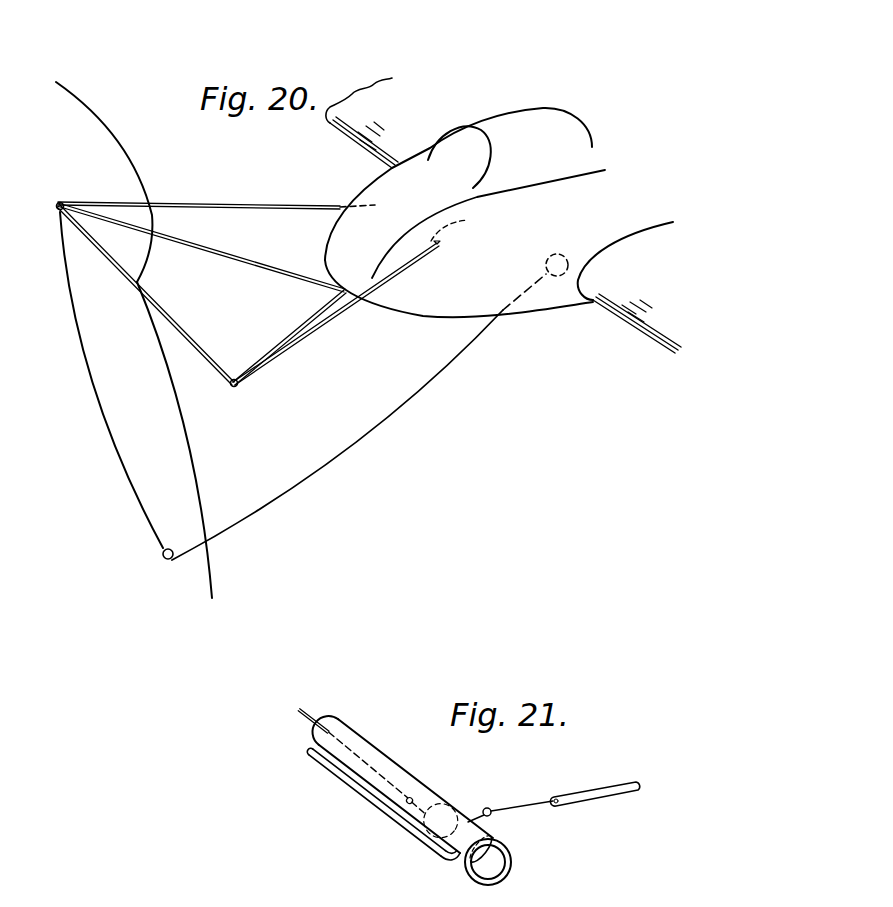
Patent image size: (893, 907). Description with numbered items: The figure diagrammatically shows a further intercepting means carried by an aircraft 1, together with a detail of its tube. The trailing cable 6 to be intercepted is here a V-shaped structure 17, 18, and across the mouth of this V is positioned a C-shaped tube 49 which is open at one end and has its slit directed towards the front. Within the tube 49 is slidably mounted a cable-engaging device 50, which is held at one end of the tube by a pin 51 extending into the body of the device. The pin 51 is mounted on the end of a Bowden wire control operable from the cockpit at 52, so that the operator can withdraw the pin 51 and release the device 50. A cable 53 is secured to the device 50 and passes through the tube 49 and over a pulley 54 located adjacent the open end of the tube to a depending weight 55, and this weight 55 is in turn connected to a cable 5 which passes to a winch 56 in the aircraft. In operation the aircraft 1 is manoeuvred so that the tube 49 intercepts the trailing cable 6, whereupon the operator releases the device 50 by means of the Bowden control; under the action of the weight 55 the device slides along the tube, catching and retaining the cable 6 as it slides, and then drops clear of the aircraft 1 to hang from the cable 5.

In FIG. 20, the aircraft 1 is at (472, 292).
In FIG. 20, the cable 5 is at (337, 463).
In FIG. 20, the trailing cable 6 is at (195, 461).
In FIG. 20, the V-shaped structure 17 is at (258, 204).
In FIG. 20, the V-shaped structure 18 is at (266, 264).
In FIG. 20, the C-shaped tube 49 is at (200, 322).
In FIG. 21, the C-shaped tube 49 is at (388, 754).
In FIG. 20, the cable-engaging device 50 is at (230, 389).
In FIG. 21, the cable-engaging device 50 is at (435, 856).
In FIG. 21, the pin 51 is at (472, 810).
In FIG. 20, the Bowden wire control 52 is at (465, 227).
In FIG. 20, the cable 53 is at (100, 395).
In FIG. 20, the pulley 54 is at (66, 218).
In FIG. 20, the depending weight 55 is at (175, 547).
In FIG. 20, the winch 56 is at (538, 270).